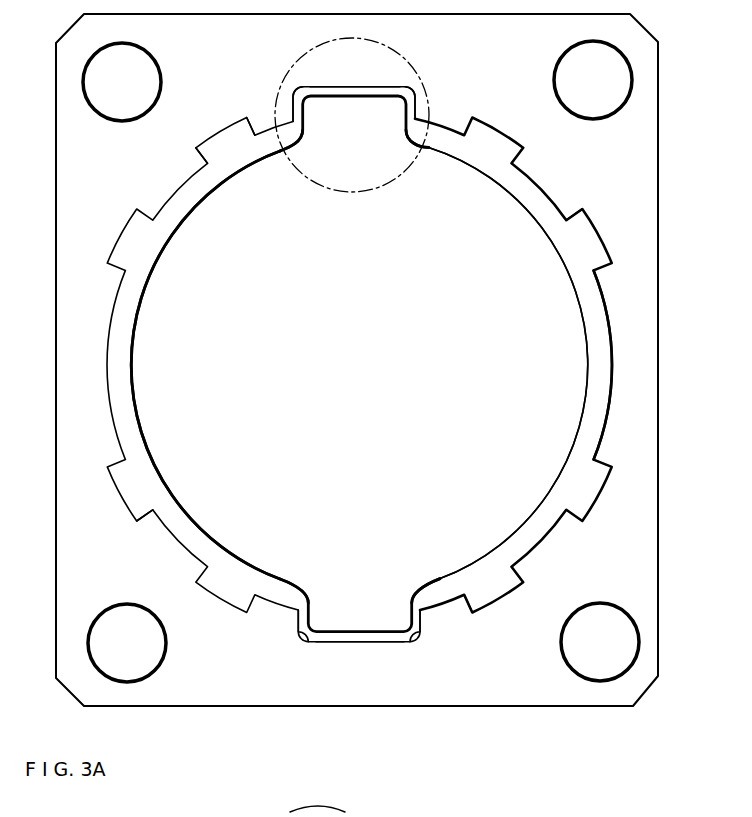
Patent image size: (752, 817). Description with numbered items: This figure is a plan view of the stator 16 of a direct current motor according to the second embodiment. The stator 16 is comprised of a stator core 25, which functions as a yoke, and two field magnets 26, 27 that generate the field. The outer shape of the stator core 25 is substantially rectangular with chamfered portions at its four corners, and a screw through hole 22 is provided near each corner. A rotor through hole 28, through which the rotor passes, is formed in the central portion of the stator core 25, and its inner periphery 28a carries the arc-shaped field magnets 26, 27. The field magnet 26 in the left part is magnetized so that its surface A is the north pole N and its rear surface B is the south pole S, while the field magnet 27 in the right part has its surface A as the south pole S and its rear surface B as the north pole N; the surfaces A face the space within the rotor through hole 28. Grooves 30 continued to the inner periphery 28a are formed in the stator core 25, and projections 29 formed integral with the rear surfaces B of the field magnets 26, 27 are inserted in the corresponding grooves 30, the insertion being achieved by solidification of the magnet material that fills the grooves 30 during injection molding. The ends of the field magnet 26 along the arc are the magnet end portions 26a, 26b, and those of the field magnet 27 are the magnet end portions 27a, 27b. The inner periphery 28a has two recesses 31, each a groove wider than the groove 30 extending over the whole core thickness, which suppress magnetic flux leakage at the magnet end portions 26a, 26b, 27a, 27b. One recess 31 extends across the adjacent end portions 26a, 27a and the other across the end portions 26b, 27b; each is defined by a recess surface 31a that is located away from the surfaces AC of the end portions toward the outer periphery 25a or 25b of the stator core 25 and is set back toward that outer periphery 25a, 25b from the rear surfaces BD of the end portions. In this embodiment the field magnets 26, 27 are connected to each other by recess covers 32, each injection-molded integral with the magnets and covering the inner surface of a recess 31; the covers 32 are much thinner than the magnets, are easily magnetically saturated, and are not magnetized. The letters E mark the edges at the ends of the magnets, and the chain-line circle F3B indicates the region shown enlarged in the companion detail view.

The stator 16 is at (55, 433).
The screw through hole 22 is at (114, 108).
The stator core 25 is at (648, 556).
The outer periphery 25a is at (244, 14).
The outer periphery 25b is at (384, 707).
The field magnet 26 is at (116, 332).
The magnet end portion 26a is at (290, 127).
The magnet end portion 26b is at (288, 590).
The field magnet 27 is at (607, 401).
The magnet end portion 27a is at (418, 131).
The magnet end portion 27b is at (438, 590).
The rotor through hole 28 is at (362, 366).
The inner periphery 28a is at (608, 303).
The projection 29 is at (201, 156).
The groove 30 is at (226, 130).
The recess 31 is at (355, 108).
The recess surface 31a is at (343, 87).
The recess cover 32 is at (321, 90).
The rear surface BD is at (291, 132).
The surface AC is at (288, 157).
The edge E is at (305, 142).
The south pole S is at (326, 355).
The north pole N is at (382, 354).
The surface A is at (134, 399).
The rear surface B is at (106, 396).
The detail area of FIG. 3B F3B is at (408, 45).